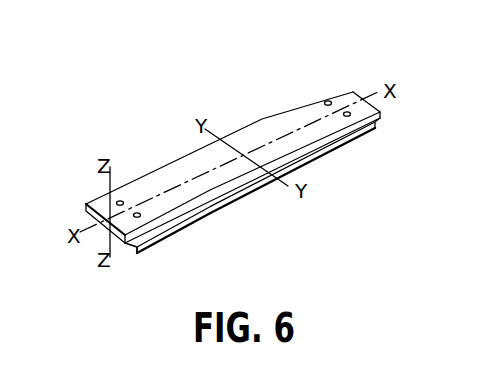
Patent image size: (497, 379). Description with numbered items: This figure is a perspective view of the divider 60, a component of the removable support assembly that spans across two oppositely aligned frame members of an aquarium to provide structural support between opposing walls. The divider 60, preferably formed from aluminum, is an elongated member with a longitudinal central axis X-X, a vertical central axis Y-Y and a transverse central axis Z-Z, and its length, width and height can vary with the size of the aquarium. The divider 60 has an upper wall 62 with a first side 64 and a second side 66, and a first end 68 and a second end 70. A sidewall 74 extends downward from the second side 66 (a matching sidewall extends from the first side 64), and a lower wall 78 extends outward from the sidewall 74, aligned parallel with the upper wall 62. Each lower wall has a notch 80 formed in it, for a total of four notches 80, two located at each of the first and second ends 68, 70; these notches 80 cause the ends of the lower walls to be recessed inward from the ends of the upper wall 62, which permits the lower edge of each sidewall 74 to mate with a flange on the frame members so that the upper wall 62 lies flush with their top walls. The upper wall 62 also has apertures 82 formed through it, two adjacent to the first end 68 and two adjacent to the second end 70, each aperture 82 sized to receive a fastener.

The divider 60 is at (346, 50).
The upper wall 62 is at (185, 168).
The first side 64 is at (163, 168).
The second side 66 is at (232, 187).
The first end 68 is at (90, 213).
The second end 70 is at (349, 90).
The sidewall 74 is at (300, 153).
The lower wall 78 is at (163, 232).
The notch 80 is at (377, 127).
The aperture 82 is at (137, 212).